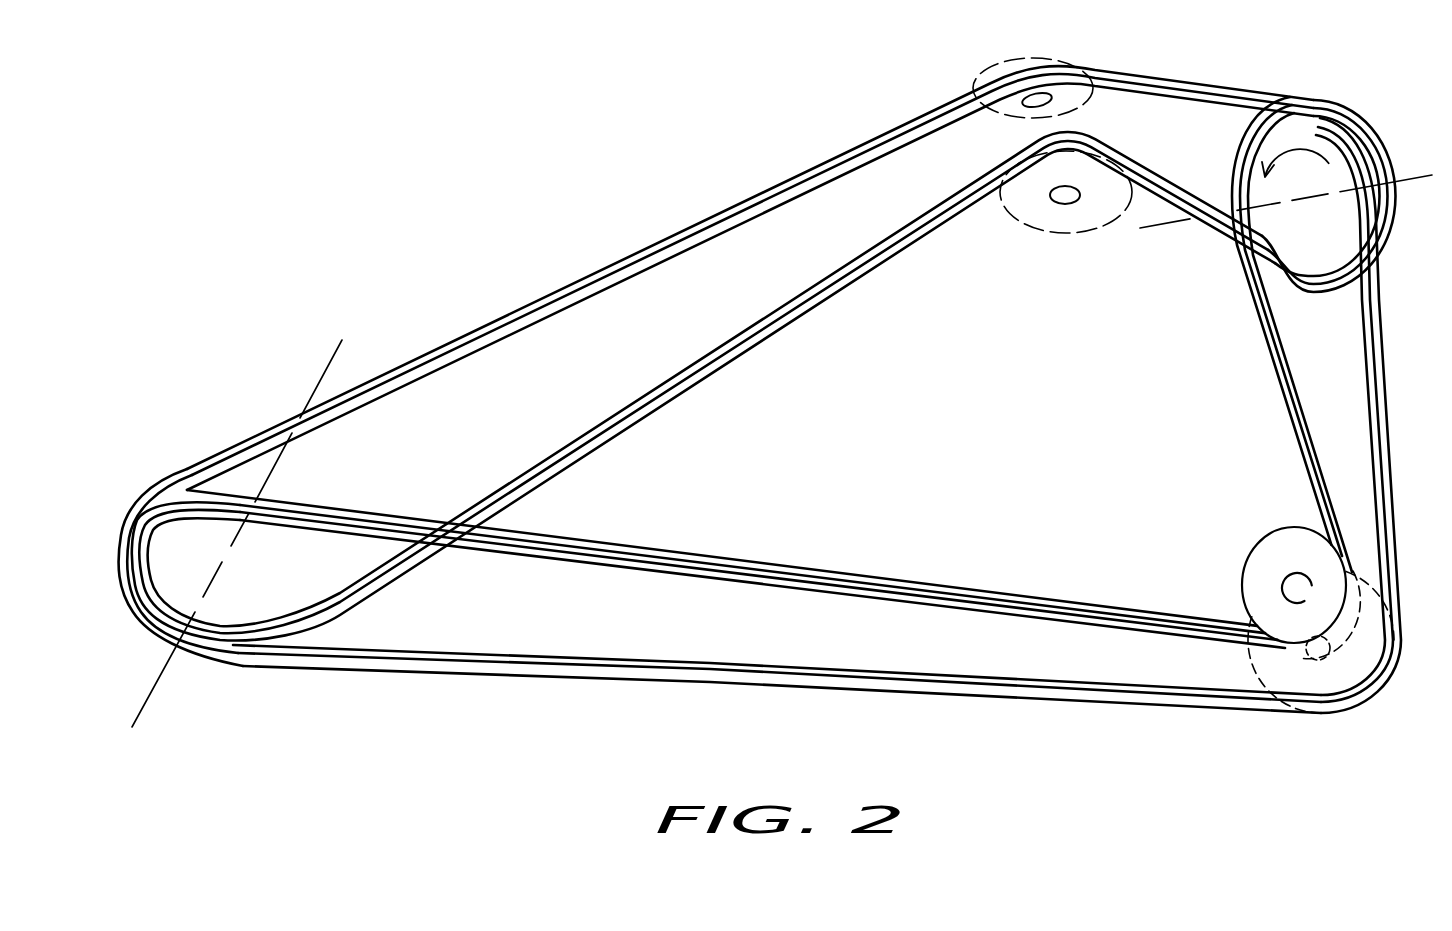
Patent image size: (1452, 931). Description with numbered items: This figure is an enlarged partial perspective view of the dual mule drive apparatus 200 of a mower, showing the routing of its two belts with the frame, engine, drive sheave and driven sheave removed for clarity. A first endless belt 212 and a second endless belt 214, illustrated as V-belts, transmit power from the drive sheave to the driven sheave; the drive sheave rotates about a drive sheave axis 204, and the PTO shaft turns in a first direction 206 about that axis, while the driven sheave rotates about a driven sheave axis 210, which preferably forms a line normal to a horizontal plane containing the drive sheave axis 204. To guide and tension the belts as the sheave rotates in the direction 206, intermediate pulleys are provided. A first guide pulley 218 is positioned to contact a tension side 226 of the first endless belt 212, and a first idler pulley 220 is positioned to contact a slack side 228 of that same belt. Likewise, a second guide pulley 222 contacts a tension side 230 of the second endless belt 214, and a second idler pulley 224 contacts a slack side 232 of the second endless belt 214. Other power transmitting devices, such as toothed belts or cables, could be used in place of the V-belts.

The dual mule drive apparatus 200 is at (622, 226).
The drive sheave axis 204 is at (1413, 177).
The first direction 206 is at (1303, 140).
The driven sheave axis 210 is at (334, 352).
The first endless belt 212 is at (815, 165).
The second endless belt 214 is at (1010, 590).
The first guide pulley 218 is at (1038, 232).
The first idler pulley 220 is at (993, 125).
The second guide pulley 222 is at (1250, 648).
The second idler pulley 224 is at (1262, 530).
The tension side of the first endless belt 226 is at (778, 334).
The slack side of the first endless belt 228 is at (503, 318).
The tension side of the second endless belt 230 is at (540, 676).
The slack side of the second endless belt 232 is at (676, 555).